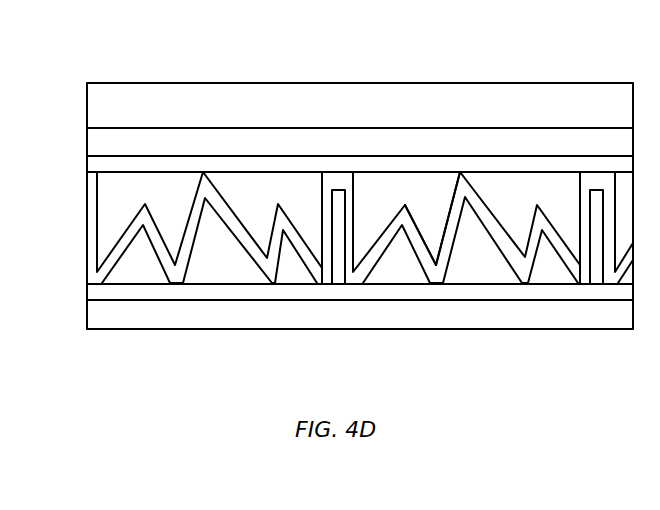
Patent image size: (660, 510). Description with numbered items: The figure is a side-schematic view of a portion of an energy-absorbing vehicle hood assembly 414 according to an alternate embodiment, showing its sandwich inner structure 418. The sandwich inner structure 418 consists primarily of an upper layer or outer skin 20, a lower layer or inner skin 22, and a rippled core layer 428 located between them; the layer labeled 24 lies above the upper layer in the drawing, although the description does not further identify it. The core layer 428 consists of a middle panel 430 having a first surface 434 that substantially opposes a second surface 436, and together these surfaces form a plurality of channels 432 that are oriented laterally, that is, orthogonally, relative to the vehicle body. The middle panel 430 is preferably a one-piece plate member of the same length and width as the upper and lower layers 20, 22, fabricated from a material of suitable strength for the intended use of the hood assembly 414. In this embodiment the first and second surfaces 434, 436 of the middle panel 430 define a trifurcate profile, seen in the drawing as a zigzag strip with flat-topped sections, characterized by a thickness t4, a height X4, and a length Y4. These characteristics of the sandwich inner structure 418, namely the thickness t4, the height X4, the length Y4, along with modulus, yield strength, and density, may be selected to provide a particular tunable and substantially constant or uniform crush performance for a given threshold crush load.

The energy-absorbing vehicle hood assembly 414 is at (183, 105).
The top layer 24 is at (307, 142).
The upper layer or outer skin 20 is at (405, 162).
The rippled core layer 428 is at (527, 188).
The middle panel 430 is at (462, 186).
The first surface 434 is at (440, 227).
The second surface 436 is at (487, 253).
The channels 432 is at (380, 272).
The lower layer or inner skin 22 is at (152, 293).
The sandwich inner structure 418 is at (382, 302).
The height X4 is at (88, 272).
The length Y4 is at (403, 195).
The thickness t4 is at (415, 268).